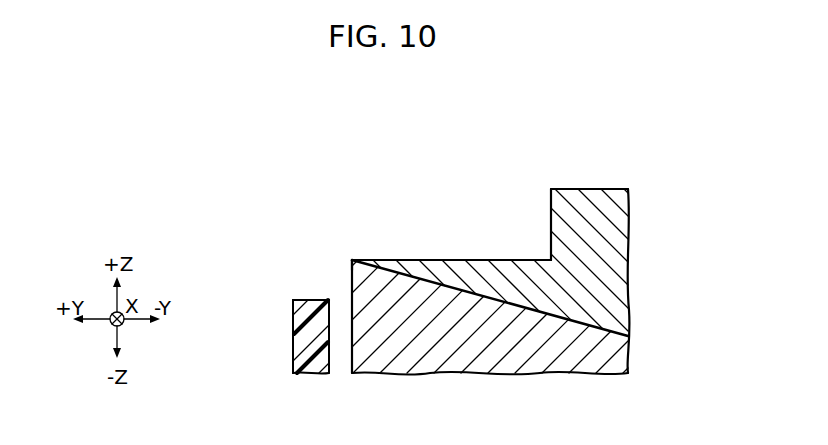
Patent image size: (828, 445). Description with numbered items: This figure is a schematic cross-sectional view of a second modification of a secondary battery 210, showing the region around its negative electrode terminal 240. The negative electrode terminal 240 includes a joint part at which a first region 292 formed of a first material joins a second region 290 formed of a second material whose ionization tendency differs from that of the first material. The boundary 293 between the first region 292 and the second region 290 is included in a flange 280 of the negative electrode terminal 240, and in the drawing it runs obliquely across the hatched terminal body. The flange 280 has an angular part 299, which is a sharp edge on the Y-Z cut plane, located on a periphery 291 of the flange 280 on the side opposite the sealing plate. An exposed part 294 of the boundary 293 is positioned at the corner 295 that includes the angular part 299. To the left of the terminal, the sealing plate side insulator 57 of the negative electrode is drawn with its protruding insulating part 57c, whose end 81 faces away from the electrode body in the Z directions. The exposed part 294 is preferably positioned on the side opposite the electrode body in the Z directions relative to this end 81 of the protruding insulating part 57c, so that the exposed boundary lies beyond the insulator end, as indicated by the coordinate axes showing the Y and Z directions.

The secondary battery 210 is at (550, 141).
The negative electrode terminal 240 is at (608, 181).
The flange 280 is at (453, 250).
The second region 290 is at (530, 360).
The periphery 291 is at (352, 352).
The first region 292 is at (518, 270).
The boundary 293 is at (595, 322).
The exposed part 294 is at (352, 258).
The corner 295 is at (350, 258).
The angular part 299 is at (355, 258).
The end 81 is at (311, 300).
The sealing plate side insulator 57 is at (283, 322).
The protruding insulating part 57c is at (297, 345).